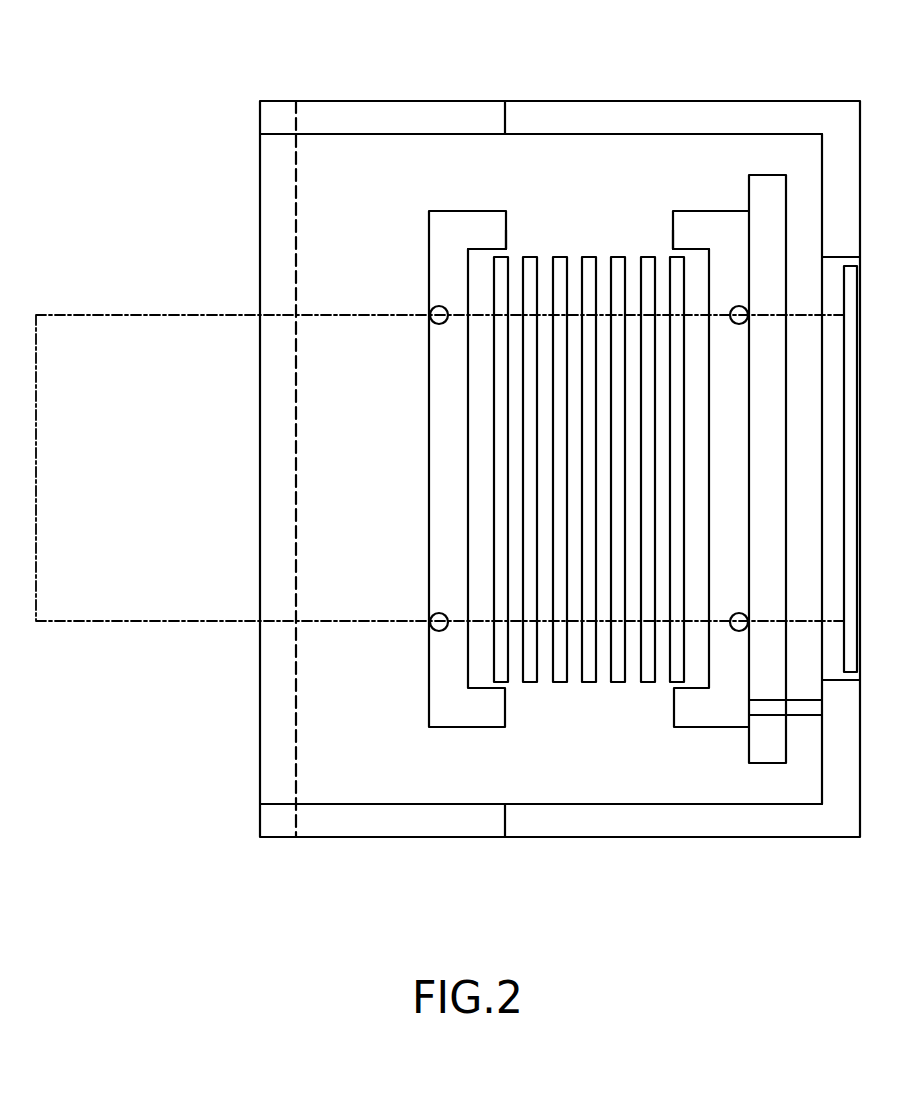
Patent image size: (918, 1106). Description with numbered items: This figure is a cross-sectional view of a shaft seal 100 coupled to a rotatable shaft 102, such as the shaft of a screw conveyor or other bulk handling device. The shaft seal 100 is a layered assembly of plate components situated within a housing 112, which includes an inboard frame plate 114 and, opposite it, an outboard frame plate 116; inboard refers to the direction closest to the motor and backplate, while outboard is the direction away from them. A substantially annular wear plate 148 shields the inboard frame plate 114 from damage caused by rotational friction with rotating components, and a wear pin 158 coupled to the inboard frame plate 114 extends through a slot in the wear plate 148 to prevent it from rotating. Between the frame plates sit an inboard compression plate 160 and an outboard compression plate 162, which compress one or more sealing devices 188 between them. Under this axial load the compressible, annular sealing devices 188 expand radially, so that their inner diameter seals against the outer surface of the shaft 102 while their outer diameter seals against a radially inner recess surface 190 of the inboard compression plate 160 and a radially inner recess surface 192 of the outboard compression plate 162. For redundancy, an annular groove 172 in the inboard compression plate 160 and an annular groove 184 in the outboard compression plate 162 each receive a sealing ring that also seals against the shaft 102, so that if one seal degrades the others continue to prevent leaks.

The shaft seal 100 is at (234, 49).
The shaft 102 is at (133, 481).
The housing 112 is at (601, 117).
The inboard frame plate 114 is at (756, 117).
The outboard frame plate 116 is at (409, 113).
The wear plate 148 is at (765, 190).
The wear pin 158 is at (800, 710).
The inboard compression plate 160 is at (698, 217).
The outboard compression plate 162 is at (460, 227).
The annular groove 172 is at (733, 627).
The annular groove 184 is at (433, 627).
The sealing devices 188 is at (674, 262).
The radially inner recess surface 190 is at (698, 248).
The radially inner recess surface 192 is at (502, 243).